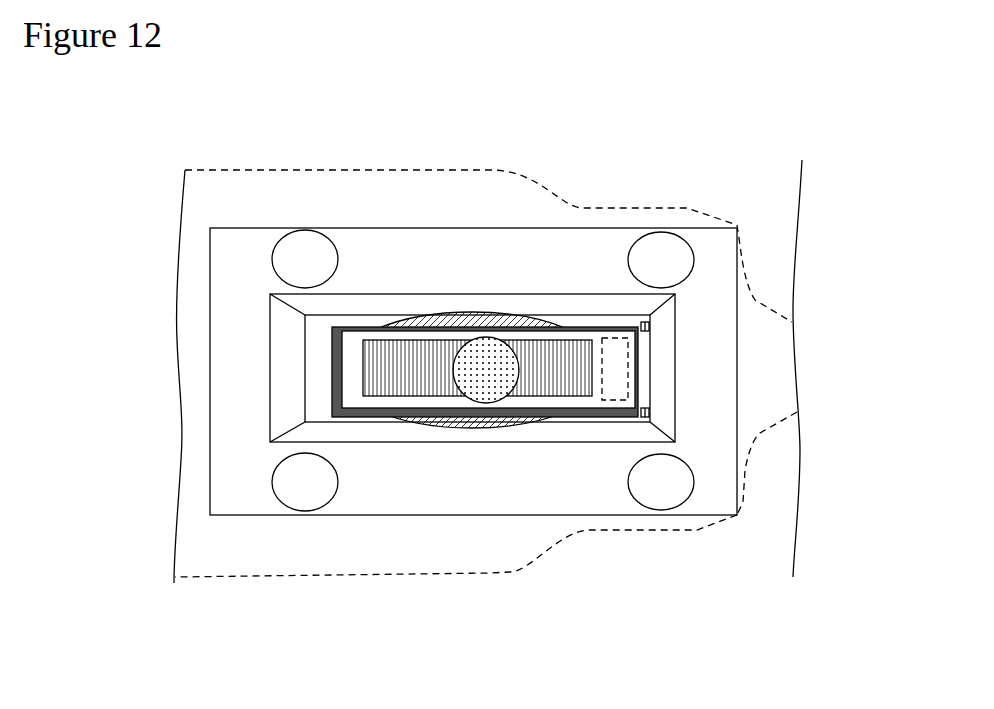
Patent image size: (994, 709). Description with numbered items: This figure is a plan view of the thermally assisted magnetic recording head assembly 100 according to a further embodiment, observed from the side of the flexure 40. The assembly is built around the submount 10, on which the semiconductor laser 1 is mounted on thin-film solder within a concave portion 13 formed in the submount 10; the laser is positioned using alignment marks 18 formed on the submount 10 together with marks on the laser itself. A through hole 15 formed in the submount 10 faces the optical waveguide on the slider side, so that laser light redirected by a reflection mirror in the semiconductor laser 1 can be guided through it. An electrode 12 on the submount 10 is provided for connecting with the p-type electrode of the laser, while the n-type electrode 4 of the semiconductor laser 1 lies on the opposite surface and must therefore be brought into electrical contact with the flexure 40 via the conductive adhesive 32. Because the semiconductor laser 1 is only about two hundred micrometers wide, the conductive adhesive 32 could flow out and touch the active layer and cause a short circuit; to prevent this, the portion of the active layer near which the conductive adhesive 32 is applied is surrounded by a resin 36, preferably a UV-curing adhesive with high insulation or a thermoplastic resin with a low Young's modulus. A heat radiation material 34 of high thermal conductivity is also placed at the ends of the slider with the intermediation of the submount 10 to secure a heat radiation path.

The semiconductor laser 1 is at (386, 266).
The n-type electrode of semiconductor laser 4 is at (537, 355).
The submount 10 is at (454, 348).
The electrode for connecting with p-type electrode of semiconductor laser 12 is at (337, 410).
The concave portion in submount 13 is at (667, 357).
The through hole 15 is at (608, 338).
The alignment mark on submount 18 is at (647, 322).
The conductive adhesive 32 is at (473, 358).
The heat radiation material 34 is at (663, 493).
The resin 36 is at (457, 317).
The flexure 40 is at (767, 305).
The thermally assisted magnetic head assembly 100 is at (224, 586).